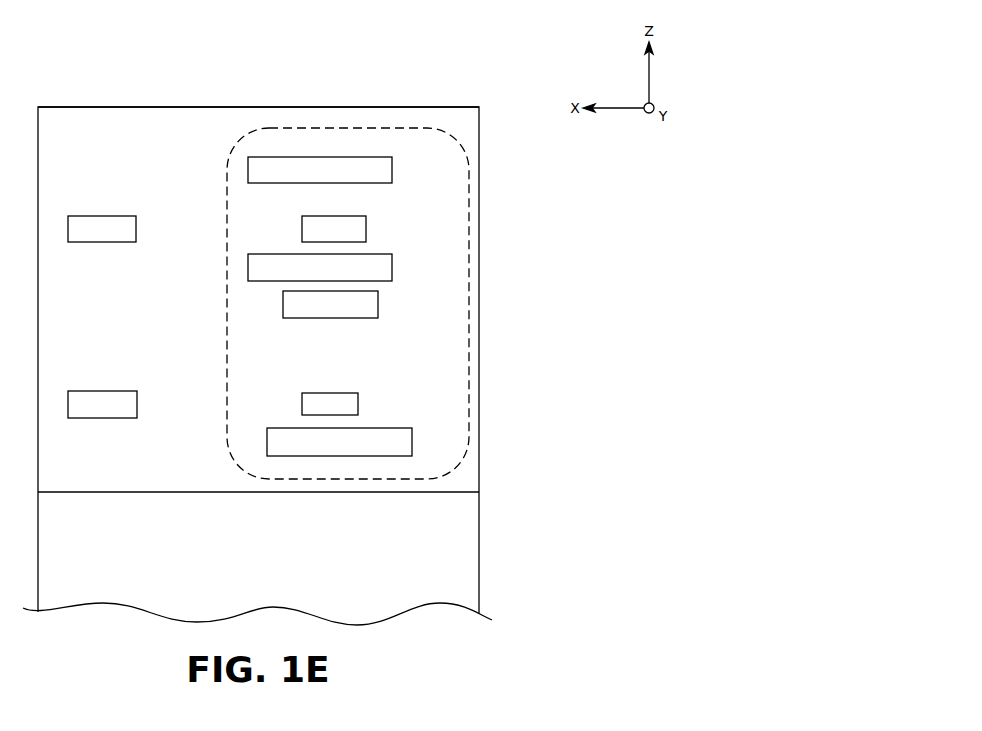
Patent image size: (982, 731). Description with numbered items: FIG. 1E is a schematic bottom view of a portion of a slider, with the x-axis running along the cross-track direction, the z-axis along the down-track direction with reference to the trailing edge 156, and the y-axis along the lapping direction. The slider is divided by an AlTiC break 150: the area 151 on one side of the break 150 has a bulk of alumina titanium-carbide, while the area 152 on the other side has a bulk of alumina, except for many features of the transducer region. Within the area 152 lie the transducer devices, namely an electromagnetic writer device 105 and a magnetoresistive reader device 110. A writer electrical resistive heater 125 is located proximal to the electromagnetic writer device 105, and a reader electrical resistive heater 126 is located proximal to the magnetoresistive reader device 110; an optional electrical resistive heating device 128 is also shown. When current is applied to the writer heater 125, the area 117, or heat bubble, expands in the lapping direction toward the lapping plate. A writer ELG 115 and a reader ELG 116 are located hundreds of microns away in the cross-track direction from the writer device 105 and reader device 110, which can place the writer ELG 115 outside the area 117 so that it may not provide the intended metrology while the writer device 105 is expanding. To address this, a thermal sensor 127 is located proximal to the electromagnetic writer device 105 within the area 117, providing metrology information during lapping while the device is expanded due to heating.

The electromagnetic writer device 105 is at (366, 226).
The magnetoresistive reader device 110 is at (358, 401).
The writer ELG 115 is at (102, 216).
The reader ELG 116 is at (102, 391).
The area 117 is at (227, 268).
The writer electrical resistive heater 125 is at (392, 266).
The reader electrical resistive heater 126 is at (412, 440).
The thermal sensor 127 is at (378, 303).
The optional electrical resistive heating device 128 is at (392, 167).
The AlTiC break 150 is at (372, 493).
The area 151 is at (272, 556).
The area 152 is at (177, 384).
The trailing edge 156 is at (384, 107).